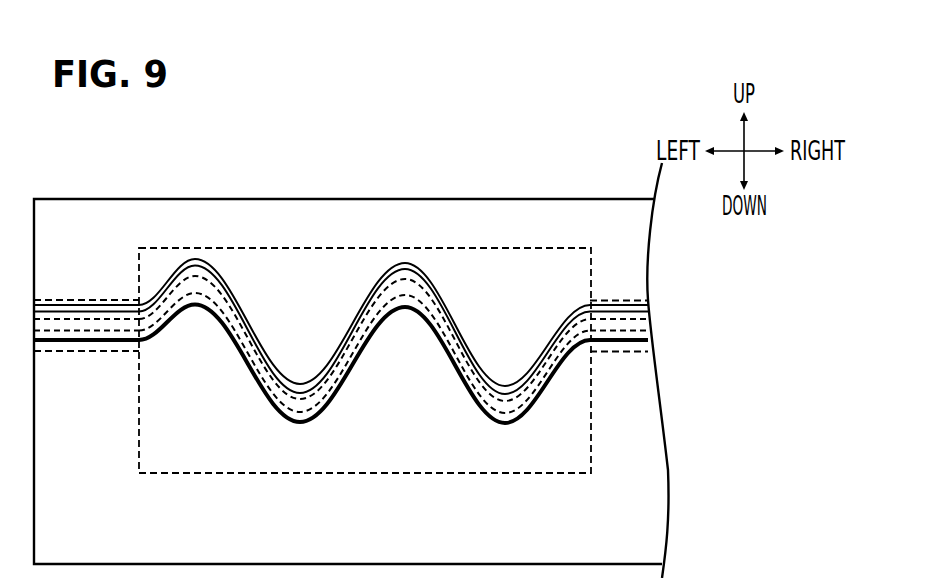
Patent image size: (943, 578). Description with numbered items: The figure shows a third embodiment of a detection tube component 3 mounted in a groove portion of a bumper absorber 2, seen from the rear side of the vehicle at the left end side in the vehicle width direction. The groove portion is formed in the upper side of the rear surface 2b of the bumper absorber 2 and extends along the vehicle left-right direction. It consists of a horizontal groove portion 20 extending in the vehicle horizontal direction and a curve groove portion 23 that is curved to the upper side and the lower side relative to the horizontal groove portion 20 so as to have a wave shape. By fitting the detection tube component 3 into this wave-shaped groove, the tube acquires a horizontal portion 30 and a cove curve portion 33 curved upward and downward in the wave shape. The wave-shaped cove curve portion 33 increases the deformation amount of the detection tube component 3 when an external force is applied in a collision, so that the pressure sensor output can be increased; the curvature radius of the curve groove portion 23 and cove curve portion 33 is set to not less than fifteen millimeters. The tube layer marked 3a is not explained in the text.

The bumper absorber 2 is at (510, 199).
The rear surface 2b is at (652, 530).
The detection tube component 3 is at (404, 264).
The inner conductor layer of wiring member 3a is at (118, 328).
The horizontal groove portion 20 is at (63, 302).
The curve groove portion 23 is at (195, 258).
The horizontal portion 30 is at (82, 353).
The cove curve portion 33 is at (288, 247).